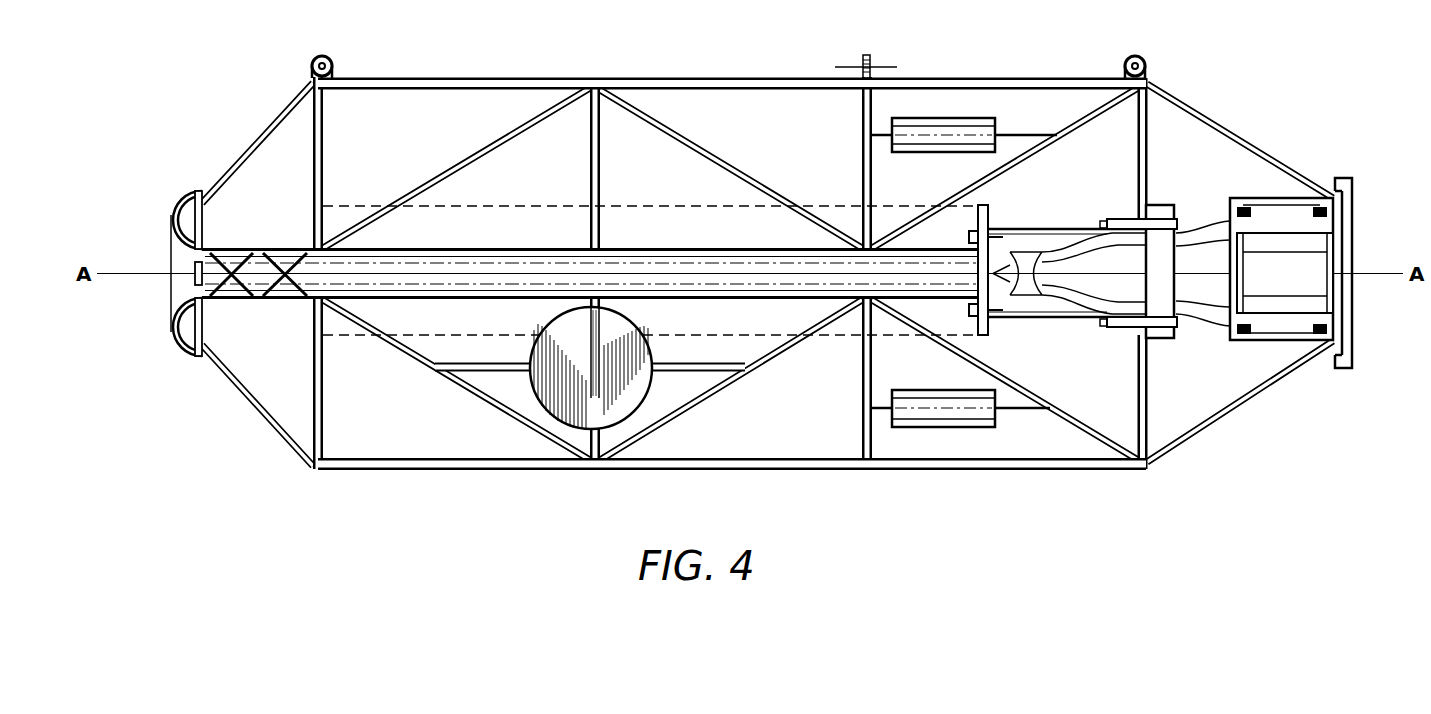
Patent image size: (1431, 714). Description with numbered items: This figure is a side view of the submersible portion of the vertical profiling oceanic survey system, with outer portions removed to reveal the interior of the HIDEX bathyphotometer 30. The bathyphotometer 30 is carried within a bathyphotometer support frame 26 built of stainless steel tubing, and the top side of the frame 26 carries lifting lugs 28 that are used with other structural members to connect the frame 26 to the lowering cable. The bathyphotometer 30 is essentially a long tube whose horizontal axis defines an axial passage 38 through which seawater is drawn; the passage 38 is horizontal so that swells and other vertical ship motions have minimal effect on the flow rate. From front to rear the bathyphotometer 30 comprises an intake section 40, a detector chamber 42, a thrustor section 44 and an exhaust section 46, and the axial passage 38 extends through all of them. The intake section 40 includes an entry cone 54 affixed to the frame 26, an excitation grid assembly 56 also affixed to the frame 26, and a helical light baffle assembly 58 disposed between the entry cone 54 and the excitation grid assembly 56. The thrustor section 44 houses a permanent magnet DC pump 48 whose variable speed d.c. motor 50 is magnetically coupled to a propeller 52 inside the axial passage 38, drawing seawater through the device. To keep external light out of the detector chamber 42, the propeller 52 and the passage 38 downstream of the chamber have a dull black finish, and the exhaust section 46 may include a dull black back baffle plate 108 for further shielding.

The bathyphotometer support frame 26 is at (676, 78).
The lifting lugs 28 is at (325, 56).
The HIDEX bathyphotometer 30 is at (378, 386).
The axial passage 38 is at (485, 258).
The intake section 40 is at (248, 181).
The detector chamber 42 is at (640, 249).
The thrustor section 44 is at (1228, 182).
The exhaust section 46 is at (1331, 168).
The permanent magnet DC pump 48 is at (1077, 228).
The variable speed d.c. motor 50 is at (1283, 292).
The propeller 52 is at (1032, 285).
The entry cone 54 is at (172, 205).
The excitation grid assembly 56 is at (322, 262).
The helical light baffle assembly 58 is at (278, 300).
The back baffle plate 108 is at (1355, 326).